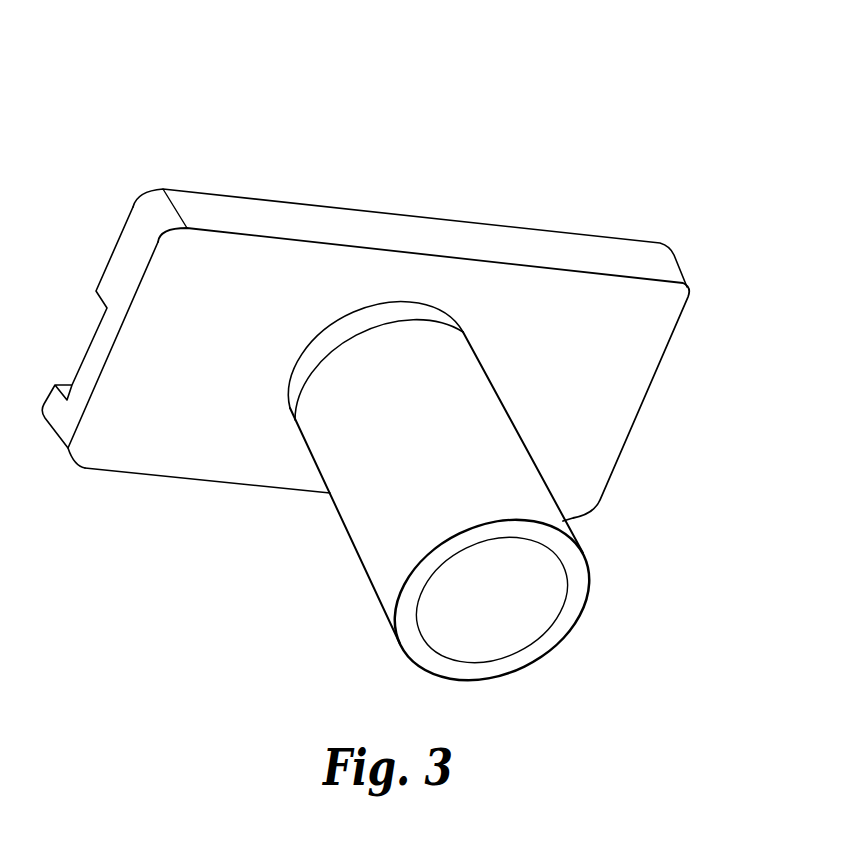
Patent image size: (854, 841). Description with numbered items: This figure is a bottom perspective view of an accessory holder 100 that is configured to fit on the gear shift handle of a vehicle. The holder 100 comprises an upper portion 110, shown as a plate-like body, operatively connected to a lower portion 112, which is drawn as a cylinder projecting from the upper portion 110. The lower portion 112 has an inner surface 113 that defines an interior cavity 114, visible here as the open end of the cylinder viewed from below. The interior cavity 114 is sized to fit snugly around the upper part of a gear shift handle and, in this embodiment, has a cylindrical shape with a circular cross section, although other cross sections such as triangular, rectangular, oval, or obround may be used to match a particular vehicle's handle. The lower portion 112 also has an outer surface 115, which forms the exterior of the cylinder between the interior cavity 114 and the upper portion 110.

The accessory holder 100 is at (415, 117).
The upper portion 110 is at (262, 199).
The lower portion 112 is at (513, 441).
The inner surface 113 is at (547, 600).
The interior cavity 114 is at (488, 630).
The outer surface 115 is at (590, 589).